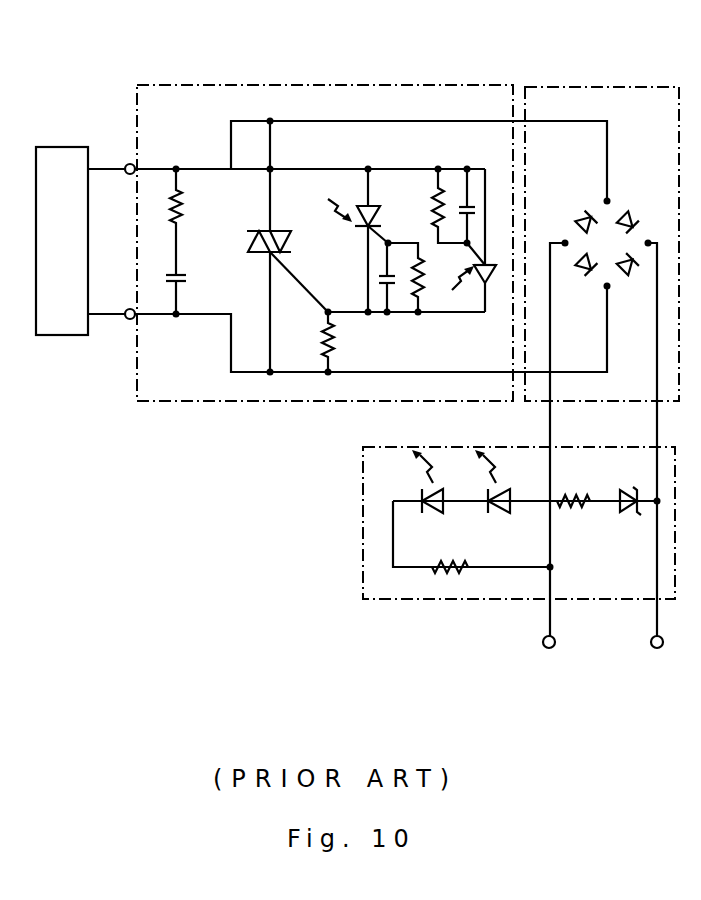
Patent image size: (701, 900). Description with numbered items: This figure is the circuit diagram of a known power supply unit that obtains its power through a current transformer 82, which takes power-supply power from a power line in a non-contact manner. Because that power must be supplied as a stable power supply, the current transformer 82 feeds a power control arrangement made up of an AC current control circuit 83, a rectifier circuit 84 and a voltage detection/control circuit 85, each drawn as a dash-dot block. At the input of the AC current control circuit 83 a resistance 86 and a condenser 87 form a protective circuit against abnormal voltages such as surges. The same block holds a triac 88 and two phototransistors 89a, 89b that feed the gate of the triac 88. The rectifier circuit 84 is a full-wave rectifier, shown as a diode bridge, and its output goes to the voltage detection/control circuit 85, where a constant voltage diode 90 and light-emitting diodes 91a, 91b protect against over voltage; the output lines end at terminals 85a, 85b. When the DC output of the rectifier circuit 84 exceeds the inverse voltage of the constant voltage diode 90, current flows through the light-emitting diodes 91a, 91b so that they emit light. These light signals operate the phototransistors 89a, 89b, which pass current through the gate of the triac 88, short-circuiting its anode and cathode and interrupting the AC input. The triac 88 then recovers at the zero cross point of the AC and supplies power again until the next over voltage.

The current transformer 82 is at (60, 147).
The AC current control circuit 83 is at (212, 85).
The rectifier circuit 84 is at (548, 87).
The voltage detection/control circuit 85 is at (409, 600).
The input terminal 85a is at (546, 650).
The input terminal 85b is at (655, 650).
The resistance 86 is at (200, 210).
The condenser 87 is at (194, 278).
The triac 88 is at (293, 241).
The phototransistor 89a is at (380, 205).
The phototransistor 89b is at (477, 290).
The constant voltage diode 90 is at (633, 513).
The light-emitting diode 91a is at (432, 511).
The light-emitting diode 91b is at (497, 511).